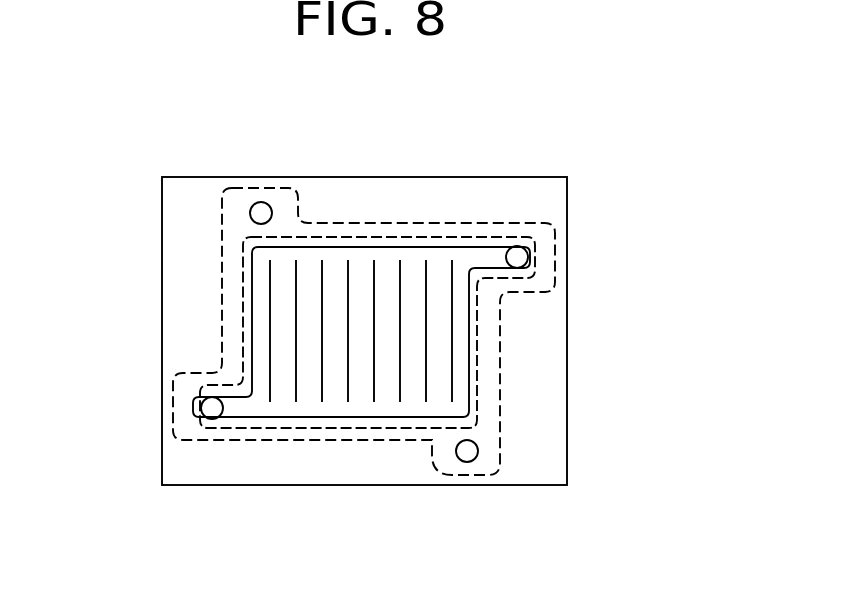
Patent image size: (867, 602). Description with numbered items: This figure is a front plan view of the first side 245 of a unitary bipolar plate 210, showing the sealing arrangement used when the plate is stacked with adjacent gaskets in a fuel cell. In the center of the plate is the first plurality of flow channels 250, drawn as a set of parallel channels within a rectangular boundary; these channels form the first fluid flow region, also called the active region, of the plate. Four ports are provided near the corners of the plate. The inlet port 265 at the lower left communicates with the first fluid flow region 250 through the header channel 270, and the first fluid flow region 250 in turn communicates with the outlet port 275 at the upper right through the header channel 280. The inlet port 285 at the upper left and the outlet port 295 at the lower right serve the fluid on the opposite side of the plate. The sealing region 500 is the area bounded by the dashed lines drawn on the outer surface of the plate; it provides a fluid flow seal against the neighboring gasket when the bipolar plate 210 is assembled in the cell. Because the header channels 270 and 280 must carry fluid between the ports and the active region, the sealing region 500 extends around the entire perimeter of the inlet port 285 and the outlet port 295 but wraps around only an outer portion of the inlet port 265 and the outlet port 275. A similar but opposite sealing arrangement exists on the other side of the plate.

The bipolar plate 210 is at (604, 163).
The first side 245 is at (558, 393).
The first plurality of flow channels 250 is at (452, 329).
The inlet port 265 is at (178, 433).
The header channel 270 is at (243, 419).
The outlet port 275 is at (527, 252).
The header channel 280 is at (464, 248).
The inlet port 285 is at (257, 203).
The outlet port 295 is at (473, 452).
The sealing region 500 is at (412, 222).